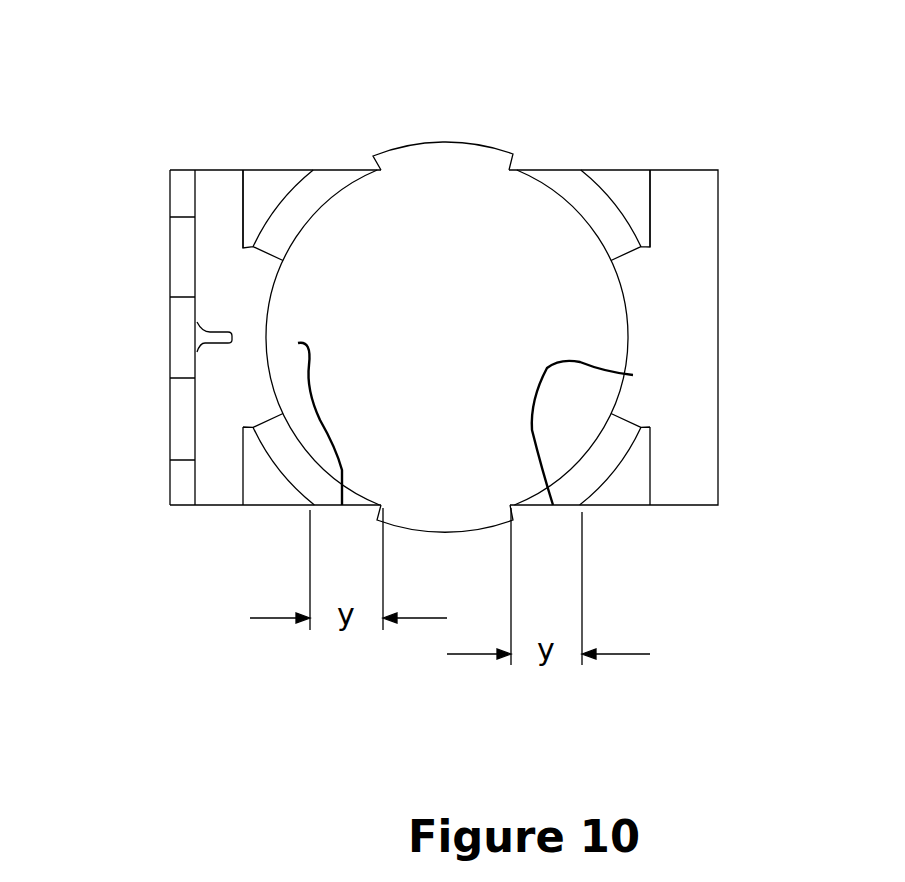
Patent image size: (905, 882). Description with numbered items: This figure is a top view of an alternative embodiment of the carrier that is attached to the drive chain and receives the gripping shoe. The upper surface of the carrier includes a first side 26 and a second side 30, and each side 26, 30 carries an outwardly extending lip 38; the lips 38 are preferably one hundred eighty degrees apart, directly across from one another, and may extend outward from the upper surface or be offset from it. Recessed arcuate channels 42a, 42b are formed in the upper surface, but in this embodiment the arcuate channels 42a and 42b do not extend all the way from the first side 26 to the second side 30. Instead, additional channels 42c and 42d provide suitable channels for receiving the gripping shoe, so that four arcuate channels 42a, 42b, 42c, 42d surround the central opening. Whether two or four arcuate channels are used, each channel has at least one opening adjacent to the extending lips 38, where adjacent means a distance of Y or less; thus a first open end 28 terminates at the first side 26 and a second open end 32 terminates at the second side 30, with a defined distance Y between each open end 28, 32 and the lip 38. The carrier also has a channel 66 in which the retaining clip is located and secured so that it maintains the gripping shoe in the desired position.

The first side 26 is at (403, 146).
The first open end 28 is at (340, 167).
The second side 30 is at (474, 528).
The second open end 32 is at (298, 343).
The outwardly extending lip 38 is at (473, 157).
The arcuate channel 42a is at (295, 211).
The arcuate channel 42b is at (593, 205).
The additional channel 42c is at (292, 453).
The additional channel 42d is at (600, 453).
The channel 66 is at (222, 187).